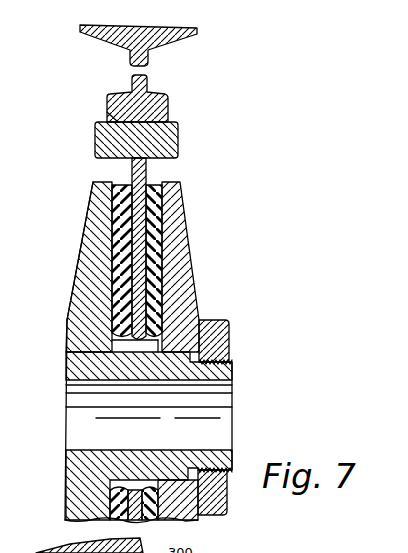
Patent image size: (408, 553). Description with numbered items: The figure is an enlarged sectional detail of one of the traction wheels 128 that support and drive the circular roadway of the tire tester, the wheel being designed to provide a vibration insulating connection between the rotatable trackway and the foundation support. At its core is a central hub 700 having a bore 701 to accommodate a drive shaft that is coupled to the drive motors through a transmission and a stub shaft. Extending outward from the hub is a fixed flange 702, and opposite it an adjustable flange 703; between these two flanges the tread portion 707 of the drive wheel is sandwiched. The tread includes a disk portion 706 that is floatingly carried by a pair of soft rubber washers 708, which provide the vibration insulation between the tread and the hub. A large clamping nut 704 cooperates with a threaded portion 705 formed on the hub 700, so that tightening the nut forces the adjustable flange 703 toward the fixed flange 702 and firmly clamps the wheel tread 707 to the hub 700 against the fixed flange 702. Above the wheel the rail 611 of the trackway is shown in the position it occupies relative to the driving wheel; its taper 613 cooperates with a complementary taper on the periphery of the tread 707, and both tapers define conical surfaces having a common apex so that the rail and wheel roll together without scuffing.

The traction wheel 128 is at (47, 251).
The rail 611 is at (155, 98).
The taper 613 is at (81, 109).
The tread portion 707 is at (161, 140).
The disk portion 706 is at (176, 249).
The soft rubber washers 708 is at (177, 260).
The fixed flange 702 is at (66, 267).
The adjustable flange 703 is at (198, 267).
The clamping nut 704 is at (236, 334).
The threaded portion 705 is at (238, 352).
The bore 701 is at (174, 401).
The central hub 700 is at (177, 421).